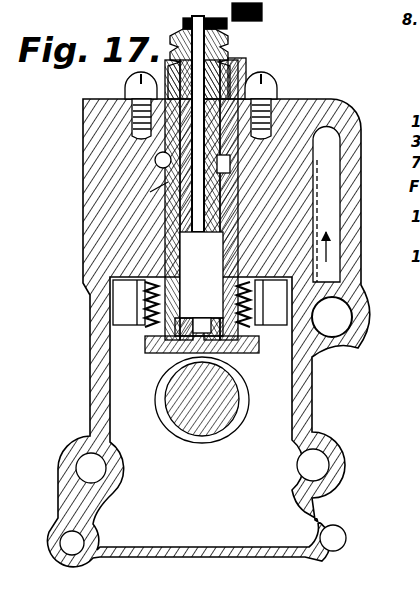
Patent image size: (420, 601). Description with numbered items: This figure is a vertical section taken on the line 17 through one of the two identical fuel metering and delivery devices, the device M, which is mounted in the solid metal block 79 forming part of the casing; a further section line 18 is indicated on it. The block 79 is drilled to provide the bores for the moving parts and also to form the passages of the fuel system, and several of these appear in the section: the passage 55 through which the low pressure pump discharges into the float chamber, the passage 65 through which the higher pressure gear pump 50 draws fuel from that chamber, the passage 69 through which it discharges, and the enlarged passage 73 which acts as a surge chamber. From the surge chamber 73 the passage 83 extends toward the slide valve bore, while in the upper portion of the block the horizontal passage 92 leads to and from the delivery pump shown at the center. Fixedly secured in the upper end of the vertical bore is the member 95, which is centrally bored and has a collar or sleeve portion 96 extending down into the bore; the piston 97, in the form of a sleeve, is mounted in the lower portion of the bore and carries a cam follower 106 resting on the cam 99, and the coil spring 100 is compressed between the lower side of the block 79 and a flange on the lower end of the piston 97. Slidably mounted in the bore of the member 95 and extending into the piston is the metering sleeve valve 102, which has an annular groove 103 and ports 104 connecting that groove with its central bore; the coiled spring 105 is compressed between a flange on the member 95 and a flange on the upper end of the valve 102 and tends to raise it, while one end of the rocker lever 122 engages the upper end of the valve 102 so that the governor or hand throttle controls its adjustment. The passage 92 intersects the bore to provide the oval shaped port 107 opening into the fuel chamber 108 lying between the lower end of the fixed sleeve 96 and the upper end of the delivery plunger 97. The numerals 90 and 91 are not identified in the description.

The section line 17 is at (210, 11).
The section line 18 is at (347, 17).
The higher pressure gear pump 50 is at (72, 540).
The passage 55 is at (333, 538).
The passage 65 is at (90, 465).
The passage 69 is at (316, 462).
The enlarged passage 73 is at (332, 328).
The solid metal block 79 is at (90, 118).
The passage 83 is at (330, 190).
The element 90 is at (255, 19).
The chamber 91 is at (222, 257).
The horizontal passage 92 is at (156, 153).
The member 95 is at (236, 70).
The collar or sleeve portion 96 is at (274, 100).
The piston 97 is at (232, 282).
The cam 99 is at (249, 374).
The coil spring 100 is at (255, 300).
The metering sleeve valve 102 is at (163, 82).
The annular groove 103 is at (168, 214).
The ports 104 is at (198, 216).
The coiled spring 105 is at (224, 60).
The cam follower 106 is at (168, 372).
The oval shaped port 107 is at (172, 190).
The fuel chamber 108 is at (170, 200).
The rocker lever 122 is at (185, 24).
The metering and delivery device M is at (90, 176).